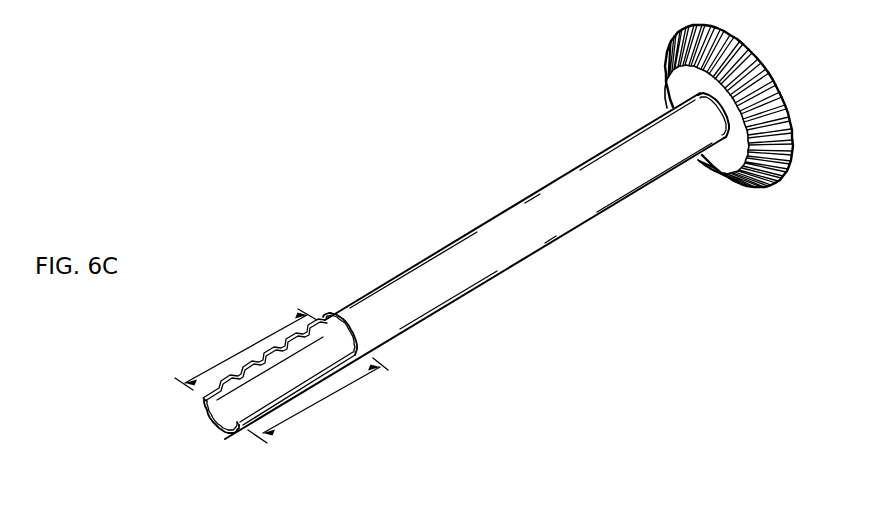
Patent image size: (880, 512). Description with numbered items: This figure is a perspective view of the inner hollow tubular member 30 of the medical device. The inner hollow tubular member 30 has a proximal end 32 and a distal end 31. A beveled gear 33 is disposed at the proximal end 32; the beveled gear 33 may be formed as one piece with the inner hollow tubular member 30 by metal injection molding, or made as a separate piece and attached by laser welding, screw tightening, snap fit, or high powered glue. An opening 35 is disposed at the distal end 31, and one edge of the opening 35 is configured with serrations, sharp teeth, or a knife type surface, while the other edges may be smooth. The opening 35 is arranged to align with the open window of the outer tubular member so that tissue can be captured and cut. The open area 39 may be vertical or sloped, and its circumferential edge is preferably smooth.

The inner hollow tubular member 30 is at (370, 124).
The distal end 31 is at (389, 333).
The proximal end 32 is at (681, 148).
The beveled gear 33 is at (668, 64).
The opening 35 is at (240, 402).
The open area 39 is at (339, 343).